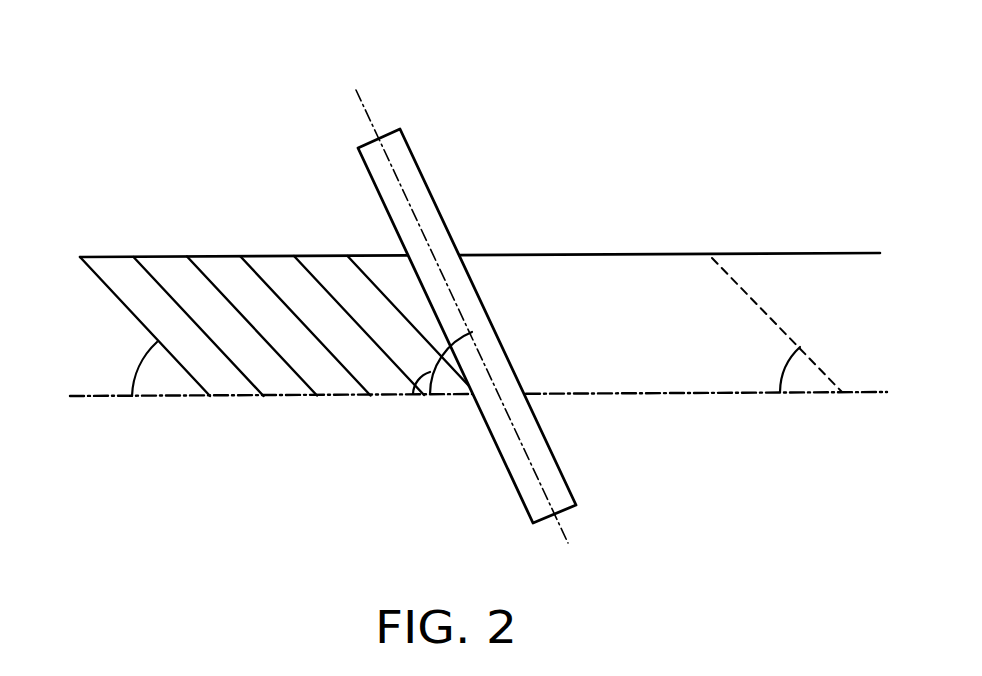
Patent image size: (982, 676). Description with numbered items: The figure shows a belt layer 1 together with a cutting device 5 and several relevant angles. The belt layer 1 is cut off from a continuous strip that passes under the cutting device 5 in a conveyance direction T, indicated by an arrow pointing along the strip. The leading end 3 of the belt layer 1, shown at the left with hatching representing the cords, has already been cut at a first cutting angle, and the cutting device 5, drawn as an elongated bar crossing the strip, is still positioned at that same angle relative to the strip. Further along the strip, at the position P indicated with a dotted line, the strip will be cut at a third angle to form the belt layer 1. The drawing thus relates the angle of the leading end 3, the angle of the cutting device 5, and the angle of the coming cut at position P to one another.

The belt layer 1 is at (661, 172).
The leading end 3 is at (131, 312).
The cutting device 5 is at (418, 160).
The conveyance direction T is at (660, 226).
The cutting position P is at (735, 278).